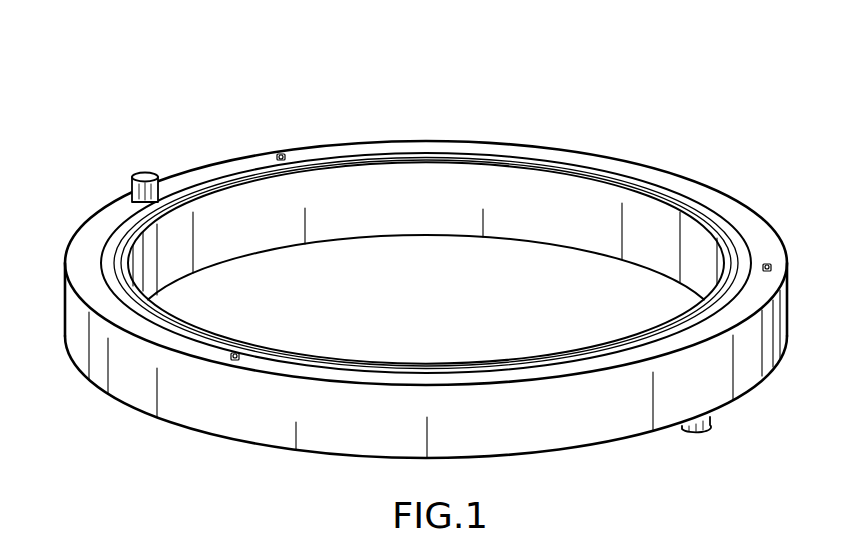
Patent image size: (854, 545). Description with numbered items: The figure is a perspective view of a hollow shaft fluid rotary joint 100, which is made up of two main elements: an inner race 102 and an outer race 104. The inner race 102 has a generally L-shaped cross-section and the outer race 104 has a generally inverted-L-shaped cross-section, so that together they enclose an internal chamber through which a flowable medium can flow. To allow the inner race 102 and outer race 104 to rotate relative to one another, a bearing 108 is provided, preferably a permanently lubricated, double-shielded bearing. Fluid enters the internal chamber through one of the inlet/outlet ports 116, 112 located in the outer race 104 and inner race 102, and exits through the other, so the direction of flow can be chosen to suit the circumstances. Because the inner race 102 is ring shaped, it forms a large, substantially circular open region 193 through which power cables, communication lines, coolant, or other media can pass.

The hollow shaft fluid rotary joint 100 is at (615, 108).
The inner race 102 is at (425, 187).
The outer race 104 is at (206, 418).
The bearing 108 is at (115, 248).
The inlet/outlet 112 is at (693, 434).
The inlet/outlet 116 is at (145, 176).
The large open region 193 is at (370, 272).